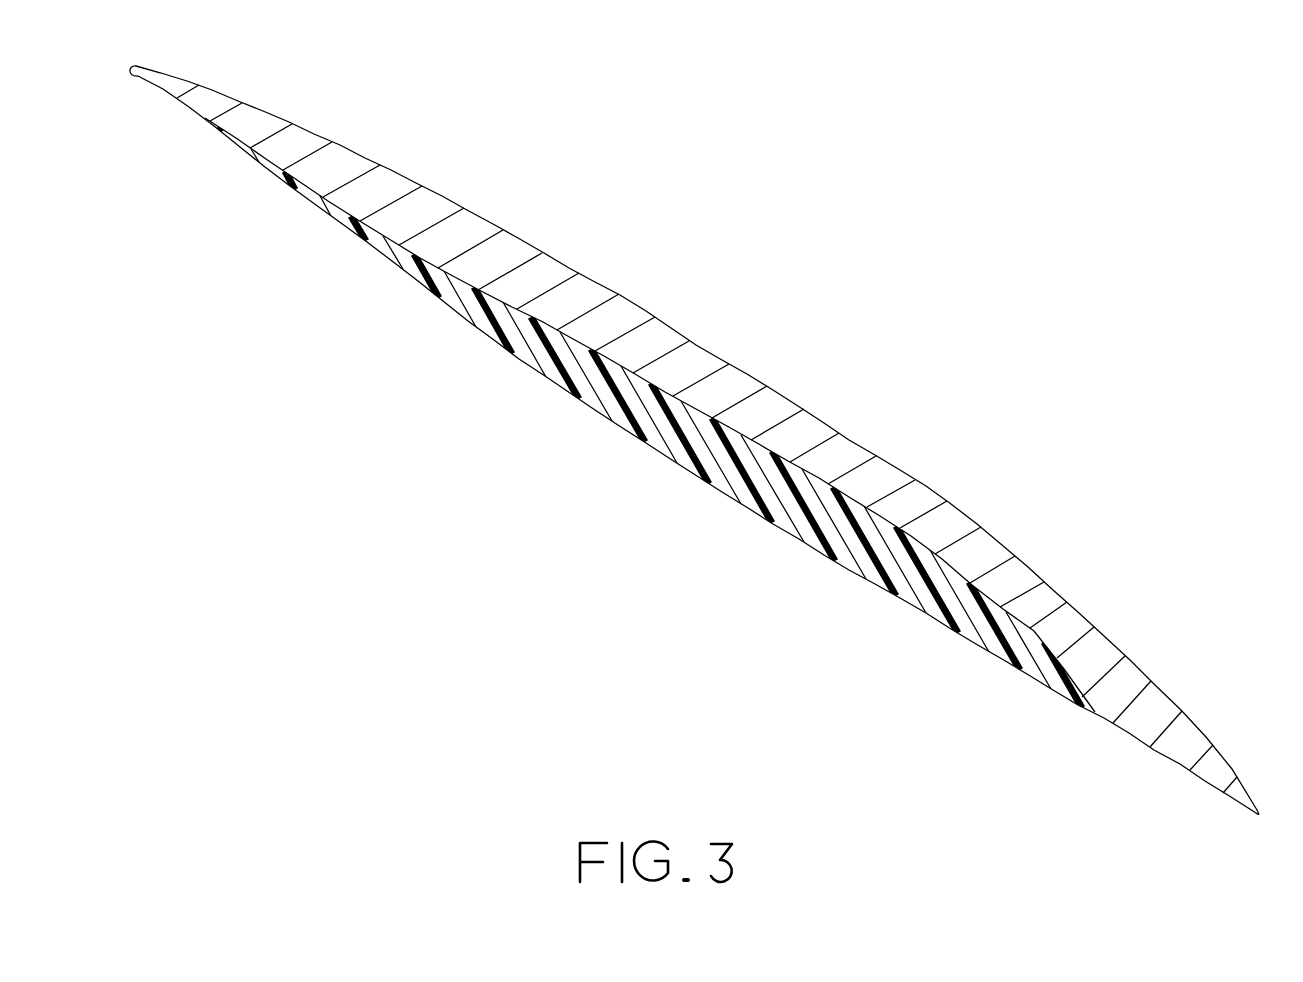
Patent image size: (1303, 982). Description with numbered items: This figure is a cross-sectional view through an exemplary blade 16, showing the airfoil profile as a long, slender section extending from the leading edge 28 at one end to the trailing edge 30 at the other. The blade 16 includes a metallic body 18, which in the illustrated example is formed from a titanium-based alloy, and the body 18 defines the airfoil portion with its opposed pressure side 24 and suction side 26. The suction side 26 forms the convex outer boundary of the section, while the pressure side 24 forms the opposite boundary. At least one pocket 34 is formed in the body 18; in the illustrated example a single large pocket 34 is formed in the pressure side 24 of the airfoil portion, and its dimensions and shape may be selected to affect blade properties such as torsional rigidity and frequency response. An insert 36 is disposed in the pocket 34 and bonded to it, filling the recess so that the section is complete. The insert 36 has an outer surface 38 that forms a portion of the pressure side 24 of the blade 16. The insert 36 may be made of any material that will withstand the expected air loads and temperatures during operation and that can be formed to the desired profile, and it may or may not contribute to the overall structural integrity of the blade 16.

The blade 16 is at (874, 96).
The metallic body 18 is at (457, 232).
The pressure side 24 is at (1133, 755).
The suction side 26 is at (1190, 698).
The leading edge 28 is at (1257, 813).
The trailing edge 30 is at (136, 66).
The pocket 34 is at (930, 546).
The insert 36 is at (813, 549).
The outer surface 38 is at (703, 490).